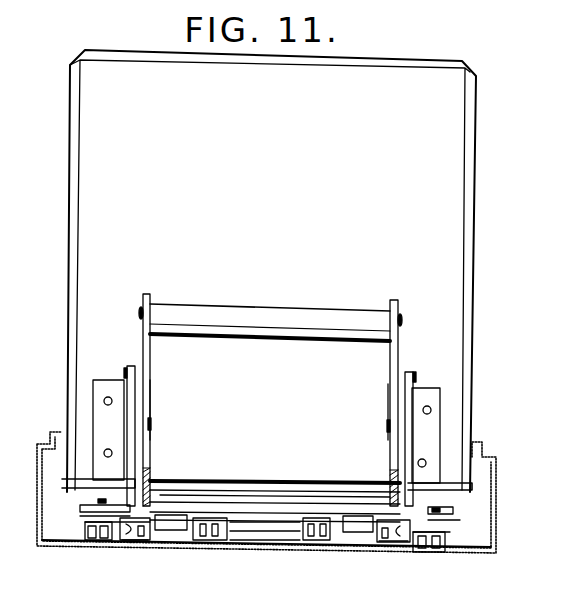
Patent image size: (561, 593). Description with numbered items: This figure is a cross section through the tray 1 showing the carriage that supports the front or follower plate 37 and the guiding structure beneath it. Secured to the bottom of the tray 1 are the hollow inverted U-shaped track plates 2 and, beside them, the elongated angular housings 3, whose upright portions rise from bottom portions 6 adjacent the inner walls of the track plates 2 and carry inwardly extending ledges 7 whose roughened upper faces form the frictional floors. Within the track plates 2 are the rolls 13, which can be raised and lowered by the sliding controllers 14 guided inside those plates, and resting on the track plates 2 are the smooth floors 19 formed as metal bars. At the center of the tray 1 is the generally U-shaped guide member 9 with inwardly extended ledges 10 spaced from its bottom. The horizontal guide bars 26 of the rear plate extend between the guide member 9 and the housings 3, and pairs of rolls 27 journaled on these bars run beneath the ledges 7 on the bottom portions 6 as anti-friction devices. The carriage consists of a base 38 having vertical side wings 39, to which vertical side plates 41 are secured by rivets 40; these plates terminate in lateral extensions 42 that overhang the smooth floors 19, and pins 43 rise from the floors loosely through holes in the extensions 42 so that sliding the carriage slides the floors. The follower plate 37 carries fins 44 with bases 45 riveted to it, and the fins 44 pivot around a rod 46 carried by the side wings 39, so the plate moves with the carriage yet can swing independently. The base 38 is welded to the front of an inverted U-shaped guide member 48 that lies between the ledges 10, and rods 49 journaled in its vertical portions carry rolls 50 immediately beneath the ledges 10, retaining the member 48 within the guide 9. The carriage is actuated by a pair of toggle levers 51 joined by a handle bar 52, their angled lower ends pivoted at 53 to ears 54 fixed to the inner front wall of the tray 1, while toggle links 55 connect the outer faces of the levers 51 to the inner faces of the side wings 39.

The tray 1 is at (37, 452).
The hollow elongated track plates 2 is at (90, 522).
The elongated angular housings 3 is at (128, 546).
The bottom portions 6 is at (133, 546).
The ledges 7 is at (180, 495).
The guide member 9 is at (214, 541).
The ledges 10 is at (203, 541).
The rolls 13 is at (88, 537).
The controllers 14 is at (92, 543).
The smooth floors 19 is at (80, 518).
The horizontal guide bars 26 is at (176, 531).
The rolls 27 is at (140, 541).
The front or follower plate 37 is at (271, 271).
The base 38 is at (262, 518).
The vertical side wings 39 is at (136, 374).
The rivets 40 is at (126, 387).
The vertical side plates 41 is at (126, 366).
The lateral extensions 42 is at (80, 508).
The pins 43 is at (100, 500).
The fins 44 is at (118, 543).
The bases 45 is at (100, 418).
The rod 46 is at (255, 480).
The elongated guide member 48 is at (268, 541).
The rods 49 is at (245, 541).
The rolls 50 is at (206, 541).
The toggle levers 51 is at (150, 397).
The handle bar 52 is at (268, 305).
The pivot 53 is at (160, 481).
The ears 54 is at (142, 470).
The toggle links 55 is at (142, 450).